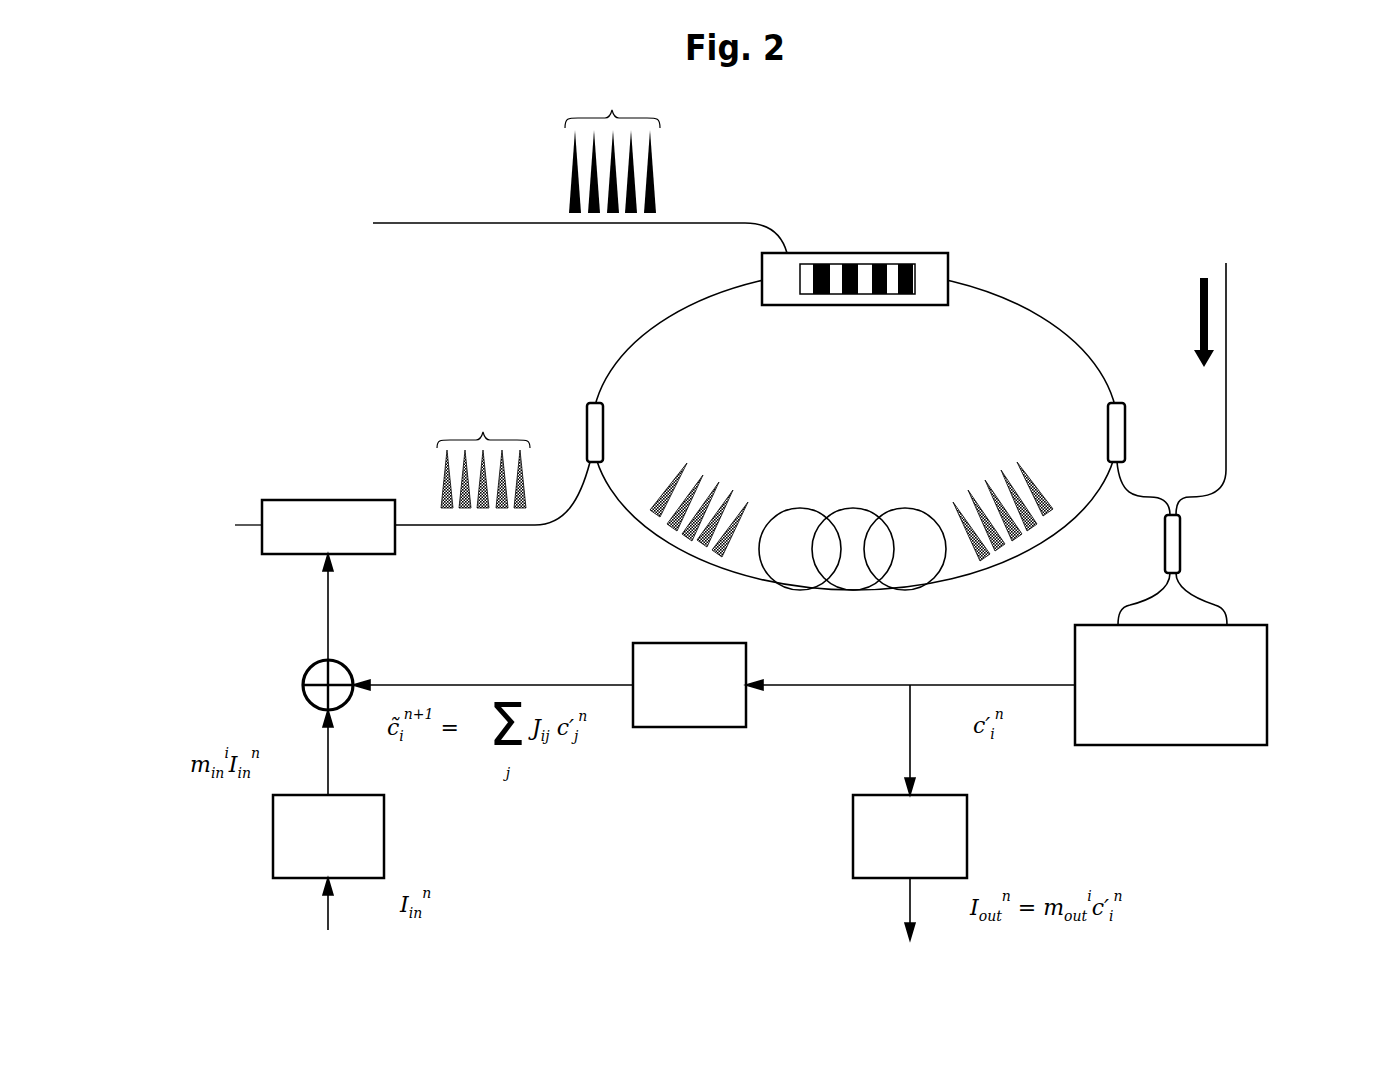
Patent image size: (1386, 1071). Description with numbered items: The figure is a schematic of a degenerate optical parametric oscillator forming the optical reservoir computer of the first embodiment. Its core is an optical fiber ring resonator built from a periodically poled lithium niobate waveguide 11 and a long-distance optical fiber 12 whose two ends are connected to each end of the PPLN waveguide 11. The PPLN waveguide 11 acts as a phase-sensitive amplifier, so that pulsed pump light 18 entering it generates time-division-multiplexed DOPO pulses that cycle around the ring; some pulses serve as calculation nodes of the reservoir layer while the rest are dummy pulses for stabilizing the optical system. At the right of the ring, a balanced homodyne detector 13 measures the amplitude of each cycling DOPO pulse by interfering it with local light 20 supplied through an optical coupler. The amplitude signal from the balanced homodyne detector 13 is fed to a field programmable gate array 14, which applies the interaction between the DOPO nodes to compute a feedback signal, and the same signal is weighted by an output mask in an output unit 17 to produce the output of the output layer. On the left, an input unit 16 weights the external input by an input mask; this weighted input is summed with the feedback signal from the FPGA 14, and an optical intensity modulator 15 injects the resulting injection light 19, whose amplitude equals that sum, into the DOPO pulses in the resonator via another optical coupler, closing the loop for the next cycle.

The PPLN waveguide 11 is at (934, 253).
The long-distance optical fiber 12 is at (993, 566).
The balanced homodyne detector 13 is at (1248, 625).
The field programmable gate array (FPGA) 14 is at (717, 643).
The optical intensity modulator 15 is at (367, 500).
The input unit 16 is at (362, 795).
The output unit 17 is at (940, 795).
The pump light 18 is at (569, 146).
The injection light 19 is at (443, 453).
The local light 20 is at (1199, 292).